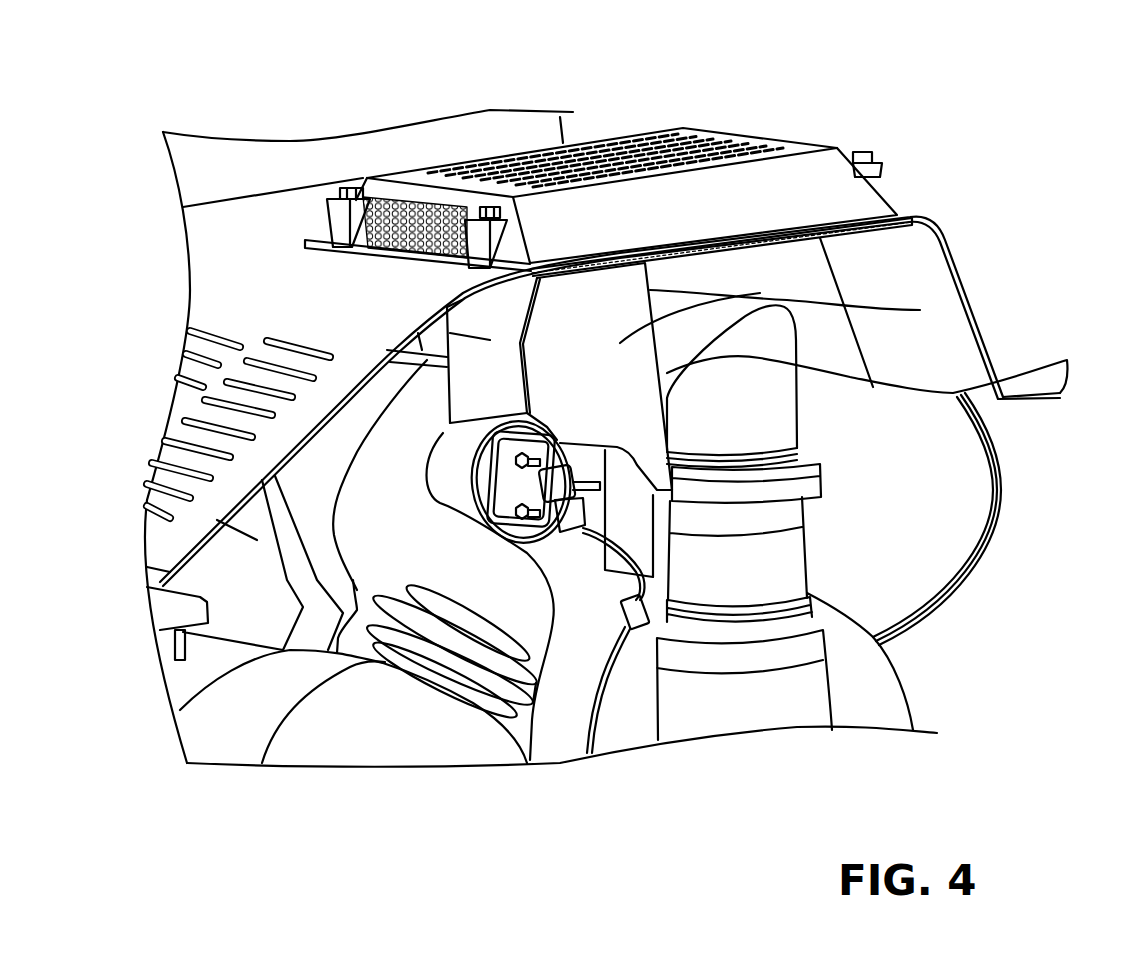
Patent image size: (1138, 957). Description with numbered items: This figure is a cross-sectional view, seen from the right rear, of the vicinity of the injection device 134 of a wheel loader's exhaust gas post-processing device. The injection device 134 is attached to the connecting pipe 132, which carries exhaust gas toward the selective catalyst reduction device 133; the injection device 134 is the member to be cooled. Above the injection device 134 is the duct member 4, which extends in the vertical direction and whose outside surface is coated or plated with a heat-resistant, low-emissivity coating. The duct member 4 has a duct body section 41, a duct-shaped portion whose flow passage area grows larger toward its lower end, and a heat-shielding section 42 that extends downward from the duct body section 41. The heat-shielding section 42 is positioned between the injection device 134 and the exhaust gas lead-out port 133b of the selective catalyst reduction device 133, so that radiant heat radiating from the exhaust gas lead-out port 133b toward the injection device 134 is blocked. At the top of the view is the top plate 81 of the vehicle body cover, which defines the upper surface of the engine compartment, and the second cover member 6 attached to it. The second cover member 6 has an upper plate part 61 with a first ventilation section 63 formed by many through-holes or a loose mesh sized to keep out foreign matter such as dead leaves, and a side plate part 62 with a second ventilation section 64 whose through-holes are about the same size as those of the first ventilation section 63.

The duct member 4 is at (987, 373).
The second cover member 6 is at (608, 153).
The duct body section 41 is at (920, 310).
The heat-shielding section 42 is at (646, 525).
The upper plate part 61 is at (705, 135).
The side plate part 62 is at (423, 193).
The first ventilation section 63 is at (610, 150).
The second ventilation section 64 is at (390, 198).
The top plate 81 is at (227, 303).
The connecting pipe 132 is at (388, 510).
The selective catalyst reduction device 133 is at (877, 693).
The exhaust gas lead-out port 133b is at (777, 565).
The injection device 134 is at (557, 524).